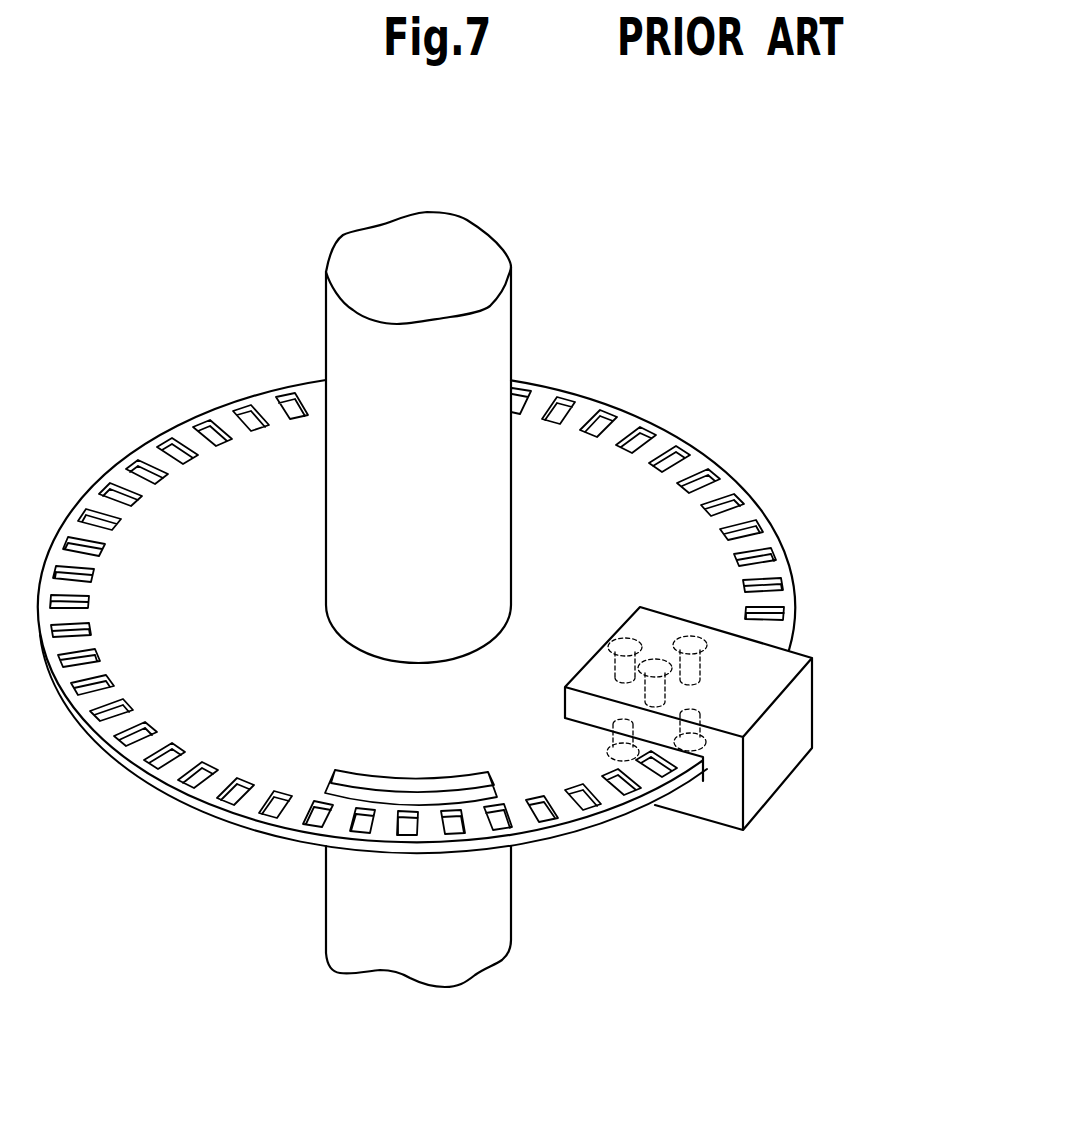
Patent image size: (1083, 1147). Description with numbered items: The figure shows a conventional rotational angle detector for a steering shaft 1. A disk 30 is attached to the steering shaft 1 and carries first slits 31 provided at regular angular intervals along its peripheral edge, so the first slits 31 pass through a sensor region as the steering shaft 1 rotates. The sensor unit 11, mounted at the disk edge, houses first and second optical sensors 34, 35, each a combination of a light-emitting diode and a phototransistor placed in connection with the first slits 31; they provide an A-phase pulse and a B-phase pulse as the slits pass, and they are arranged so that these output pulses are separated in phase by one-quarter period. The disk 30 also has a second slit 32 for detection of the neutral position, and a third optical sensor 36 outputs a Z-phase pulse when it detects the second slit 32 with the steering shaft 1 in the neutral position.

The steering shaft 1 is at (483, 356).
The disk 30 is at (212, 472).
The first slits 31 is at (757, 554).
The second slit 32 is at (447, 793).
The rotation detecting unit 11 is at (726, 630).
The first optical sensor 34 is at (695, 738).
The second optical sensor 35 is at (655, 690).
The third optical sensor 36 is at (625, 639).